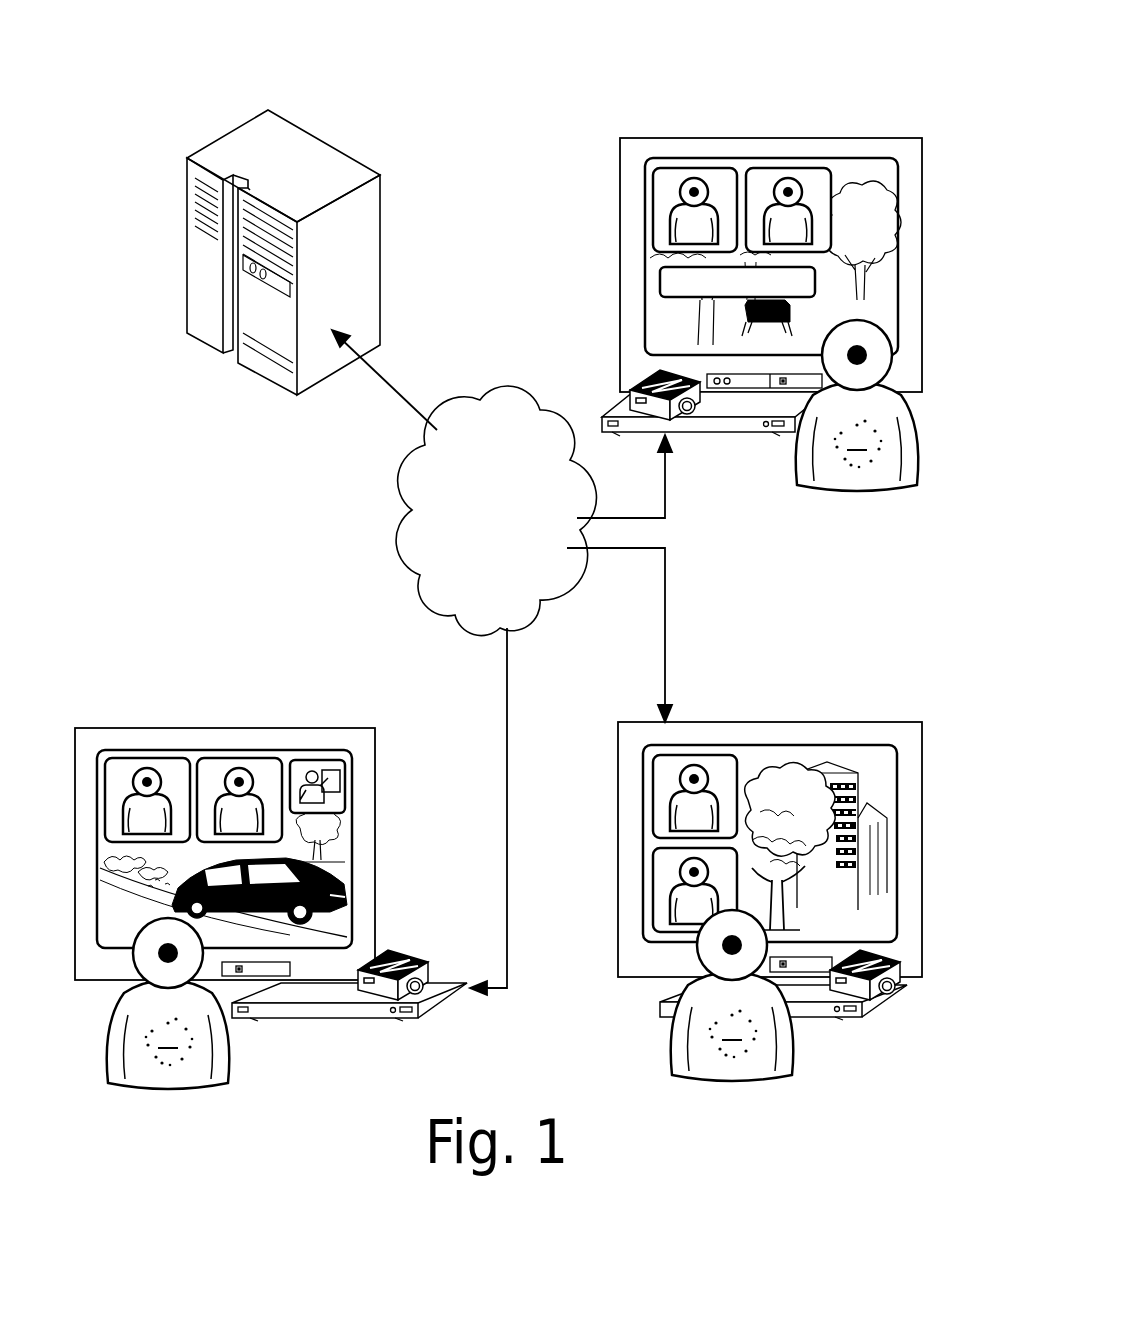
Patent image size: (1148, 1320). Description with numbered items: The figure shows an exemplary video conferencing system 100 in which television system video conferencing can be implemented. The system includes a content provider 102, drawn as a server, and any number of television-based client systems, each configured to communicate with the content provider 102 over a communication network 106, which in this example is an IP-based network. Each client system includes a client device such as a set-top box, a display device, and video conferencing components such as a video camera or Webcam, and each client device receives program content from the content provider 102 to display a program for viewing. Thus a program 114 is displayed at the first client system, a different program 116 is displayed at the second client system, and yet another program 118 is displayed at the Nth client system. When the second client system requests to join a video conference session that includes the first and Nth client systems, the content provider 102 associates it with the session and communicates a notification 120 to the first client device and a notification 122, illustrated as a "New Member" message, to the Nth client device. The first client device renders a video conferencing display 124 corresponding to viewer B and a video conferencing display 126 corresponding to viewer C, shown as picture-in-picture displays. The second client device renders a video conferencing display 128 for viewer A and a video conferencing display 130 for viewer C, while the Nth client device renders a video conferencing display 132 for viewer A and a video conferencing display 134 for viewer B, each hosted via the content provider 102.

The video conferencing system 100 is at (443, 96).
The content provider 102 is at (345, 431).
The communication network 106 is at (575, 479).
The program 114 is at (340, 857).
The program 116 is at (797, 762).
The program 118 is at (860, 178).
The notification 120 is at (313, 758).
The notification 122 is at (653, 265).
The video conferencing display 124 is at (137, 760).
The video conferencing display 126 is at (227, 760).
The video conferencing display 128 is at (652, 803).
The video conferencing display 130 is at (652, 873).
The video conferencing display 132 is at (695, 168).
The video conferencing display 134 is at (790, 168).